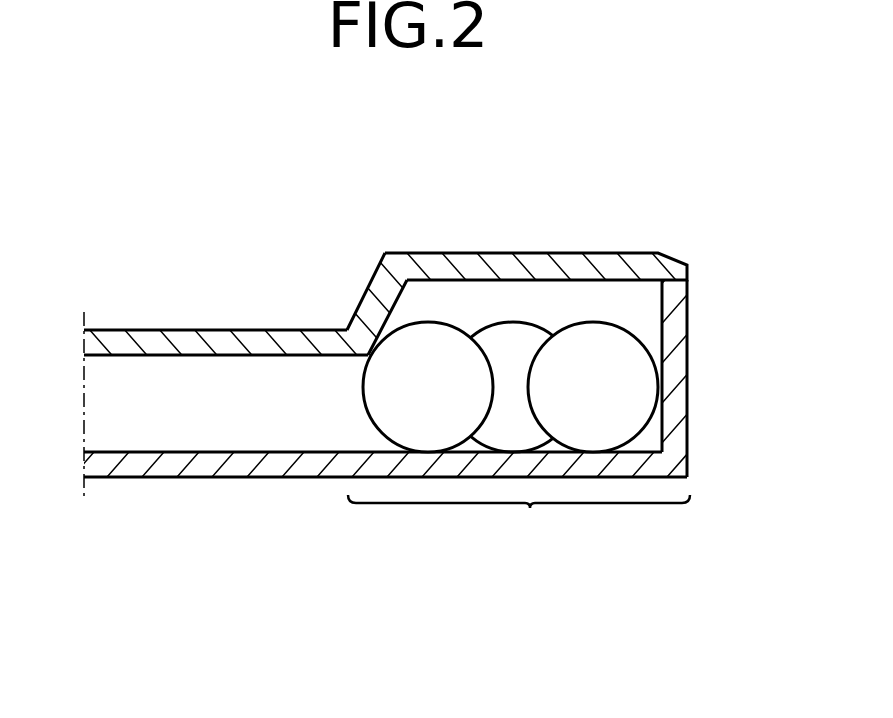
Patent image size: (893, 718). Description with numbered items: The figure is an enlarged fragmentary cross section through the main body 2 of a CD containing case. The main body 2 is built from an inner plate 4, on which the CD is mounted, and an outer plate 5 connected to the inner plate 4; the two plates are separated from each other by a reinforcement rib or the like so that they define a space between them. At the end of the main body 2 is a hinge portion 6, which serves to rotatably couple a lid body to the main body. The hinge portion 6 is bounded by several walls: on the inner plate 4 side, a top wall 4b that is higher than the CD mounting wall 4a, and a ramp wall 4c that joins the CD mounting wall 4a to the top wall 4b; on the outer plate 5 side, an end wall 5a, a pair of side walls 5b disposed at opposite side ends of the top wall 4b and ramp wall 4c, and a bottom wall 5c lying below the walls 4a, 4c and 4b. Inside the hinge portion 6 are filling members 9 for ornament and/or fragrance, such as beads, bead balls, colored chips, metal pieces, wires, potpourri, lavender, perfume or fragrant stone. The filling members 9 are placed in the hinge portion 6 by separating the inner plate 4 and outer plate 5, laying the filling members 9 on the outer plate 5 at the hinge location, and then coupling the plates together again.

The main body 2 is at (163, 507).
The inner plate 4 is at (457, 251).
The CD mounting wall 4a is at (167, 347).
The top wall 4b is at (538, 253).
The ramp wall 4c is at (383, 290).
The outer plate 5 is at (275, 479).
The end wall 5a is at (680, 395).
The side wall 5b is at (643, 314).
The bottom wall 5c is at (640, 460).
The hinge portion 6 is at (519, 523).
The filling members 9 is at (607, 338).